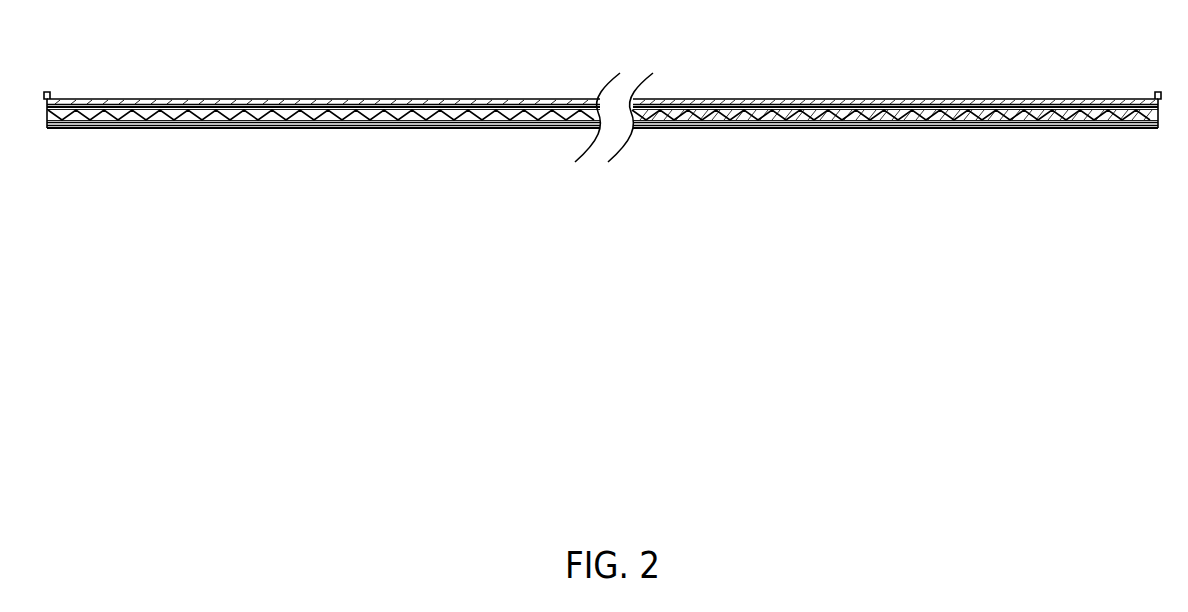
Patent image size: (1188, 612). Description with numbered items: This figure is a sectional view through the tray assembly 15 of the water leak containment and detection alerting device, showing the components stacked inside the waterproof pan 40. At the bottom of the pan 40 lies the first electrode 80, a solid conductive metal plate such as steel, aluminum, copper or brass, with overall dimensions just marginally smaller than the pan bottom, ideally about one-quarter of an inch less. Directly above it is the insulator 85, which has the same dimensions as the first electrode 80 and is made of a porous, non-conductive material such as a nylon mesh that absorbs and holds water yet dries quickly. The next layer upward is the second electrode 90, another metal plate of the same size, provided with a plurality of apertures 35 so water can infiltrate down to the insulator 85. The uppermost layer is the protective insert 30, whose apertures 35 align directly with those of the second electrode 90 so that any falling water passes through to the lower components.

The tray assembly 15 is at (168, 455).
The protective insert 30 is at (263, 98).
The apertures 35 is at (697, 100).
The waterproof pan 40 is at (413, 127).
The first electrode 80 is at (455, 112).
The insulator 85 is at (372, 113).
The second electrode 90 is at (283, 107).